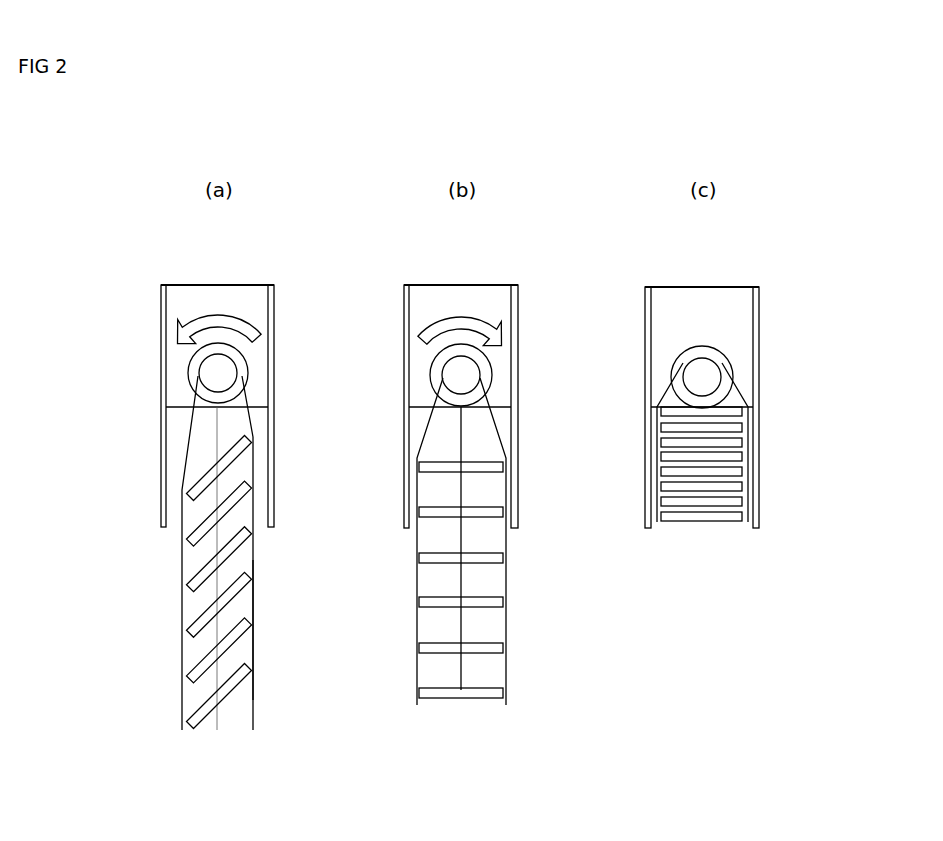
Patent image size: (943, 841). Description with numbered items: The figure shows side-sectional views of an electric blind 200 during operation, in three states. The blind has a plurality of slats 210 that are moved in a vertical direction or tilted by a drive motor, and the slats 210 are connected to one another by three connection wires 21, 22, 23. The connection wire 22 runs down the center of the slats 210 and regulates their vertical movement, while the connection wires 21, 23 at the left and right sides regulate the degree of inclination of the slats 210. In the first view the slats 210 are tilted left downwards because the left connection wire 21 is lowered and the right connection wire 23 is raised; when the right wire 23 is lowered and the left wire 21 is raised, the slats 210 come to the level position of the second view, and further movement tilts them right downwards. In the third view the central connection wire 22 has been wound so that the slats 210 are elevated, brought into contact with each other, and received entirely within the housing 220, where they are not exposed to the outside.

The electric blind 200 is at (290, 316).
The housing 220 is at (282, 432).
The slats 210 is at (190, 583).
The connection wire 21 is at (182, 643).
The connection wire 22 is at (208, 686).
The connection wire 23 is at (253, 643).